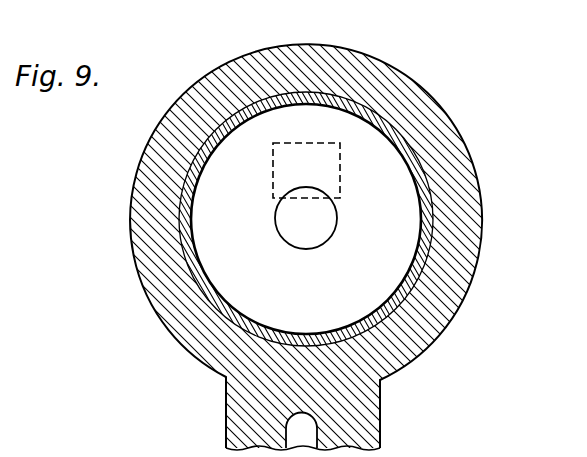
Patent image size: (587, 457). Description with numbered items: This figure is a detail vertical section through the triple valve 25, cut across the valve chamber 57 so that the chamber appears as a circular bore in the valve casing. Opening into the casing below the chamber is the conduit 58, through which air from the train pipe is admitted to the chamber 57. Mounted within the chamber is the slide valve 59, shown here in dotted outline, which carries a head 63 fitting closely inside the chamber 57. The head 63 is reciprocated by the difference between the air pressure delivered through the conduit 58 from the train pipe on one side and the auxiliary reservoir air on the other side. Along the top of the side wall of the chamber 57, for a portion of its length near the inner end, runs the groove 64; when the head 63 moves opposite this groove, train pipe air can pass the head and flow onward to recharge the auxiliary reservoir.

The triple valve 25 is at (310, 228).
The valve chamber 57 is at (403, 268).
The conduit 58 is at (307, 428).
The slide valve 59 is at (342, 173).
The head 63 is at (306, 245).
The groove 64 is at (326, 93).